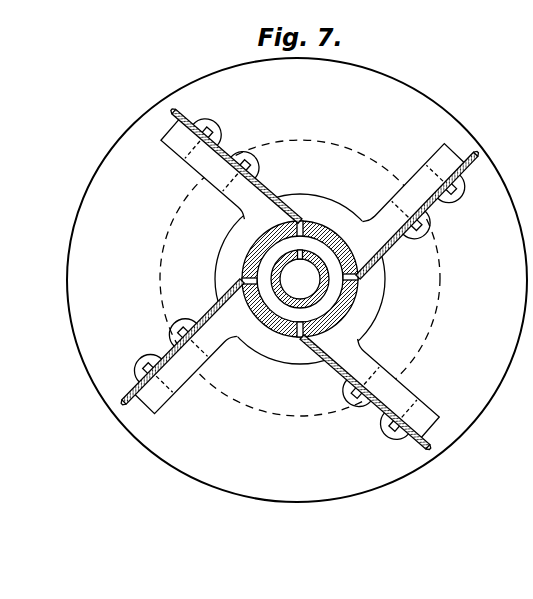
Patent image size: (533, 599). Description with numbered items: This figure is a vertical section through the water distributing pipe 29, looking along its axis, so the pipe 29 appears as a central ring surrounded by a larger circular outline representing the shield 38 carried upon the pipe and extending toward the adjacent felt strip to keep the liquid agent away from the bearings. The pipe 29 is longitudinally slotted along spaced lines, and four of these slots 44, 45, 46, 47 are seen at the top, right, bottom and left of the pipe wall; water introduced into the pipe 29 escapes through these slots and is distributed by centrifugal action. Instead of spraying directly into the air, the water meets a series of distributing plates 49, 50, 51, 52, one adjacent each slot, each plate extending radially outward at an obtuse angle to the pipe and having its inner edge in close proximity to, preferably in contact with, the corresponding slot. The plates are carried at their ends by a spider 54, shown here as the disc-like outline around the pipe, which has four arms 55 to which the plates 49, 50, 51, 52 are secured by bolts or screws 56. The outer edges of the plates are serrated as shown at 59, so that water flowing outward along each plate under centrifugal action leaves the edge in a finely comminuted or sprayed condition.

The shield 38 is at (421, 98).
The water distributing pipe 29 is at (333, 227).
The spider 54 is at (372, 321).
The arm 55 is at (161, 141).
The longitudinal slot 44 is at (300, 221).
The longitudinal slot 45 is at (358, 277).
The longitudinal slot 46 is at (300, 337).
The longitudinal slot 47 is at (242, 279).
The distributing plate 49 is at (225, 156).
The distributing plate 50 is at (430, 206).
The distributing plate 51 is at (375, 401).
The distributing plate 52 is at (169, 355).
The bolt or screw 56 is at (216, 123).
The serrated outer edge 59 is at (174, 110).